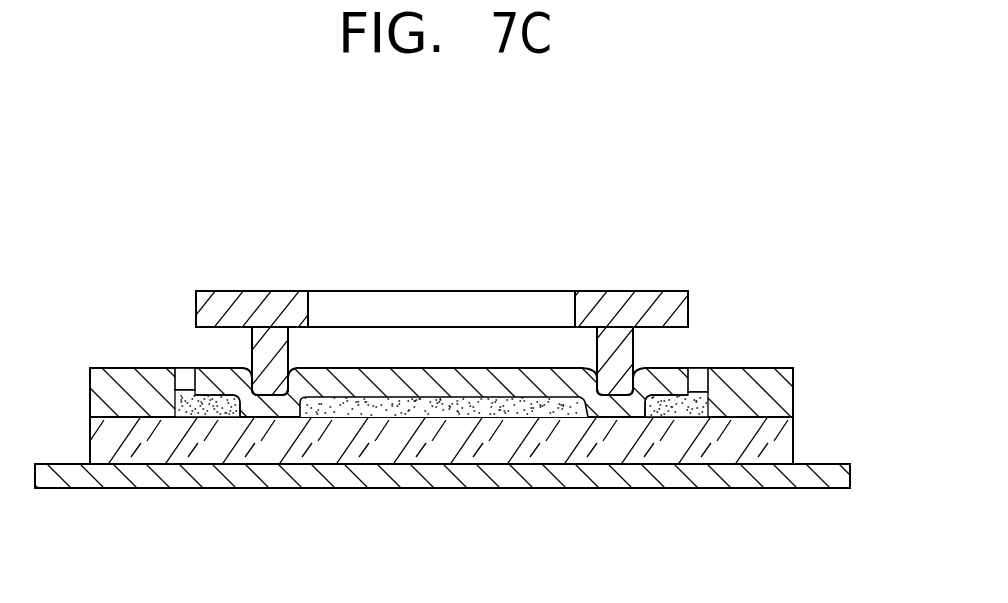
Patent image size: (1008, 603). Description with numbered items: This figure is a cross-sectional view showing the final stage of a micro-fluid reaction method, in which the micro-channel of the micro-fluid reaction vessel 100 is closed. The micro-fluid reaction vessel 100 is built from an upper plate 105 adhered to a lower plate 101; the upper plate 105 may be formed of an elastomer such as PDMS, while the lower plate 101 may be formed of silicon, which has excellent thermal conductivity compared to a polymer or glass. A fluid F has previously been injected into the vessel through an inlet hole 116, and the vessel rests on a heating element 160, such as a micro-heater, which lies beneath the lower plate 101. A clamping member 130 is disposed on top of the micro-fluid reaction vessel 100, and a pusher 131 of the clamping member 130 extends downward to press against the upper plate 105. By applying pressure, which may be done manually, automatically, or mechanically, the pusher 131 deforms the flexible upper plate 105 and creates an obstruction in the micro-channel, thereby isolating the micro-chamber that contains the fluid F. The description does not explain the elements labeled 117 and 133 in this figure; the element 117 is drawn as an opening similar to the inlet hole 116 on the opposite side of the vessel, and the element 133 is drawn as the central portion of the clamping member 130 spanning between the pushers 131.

The micro-fluid reaction vessel 100 is at (446, 394).
The lower plate 101 is at (788, 447).
The upper plate 105 is at (788, 396).
The inlet hole 116 is at (183, 380).
The second bonding pad 117 is at (698, 387).
The clamping member 130 is at (667, 305).
The pusher 131 is at (280, 352).
The chip body 133 is at (453, 305).
The fluid F is at (422, 405).
The heating element 160 is at (680, 482).